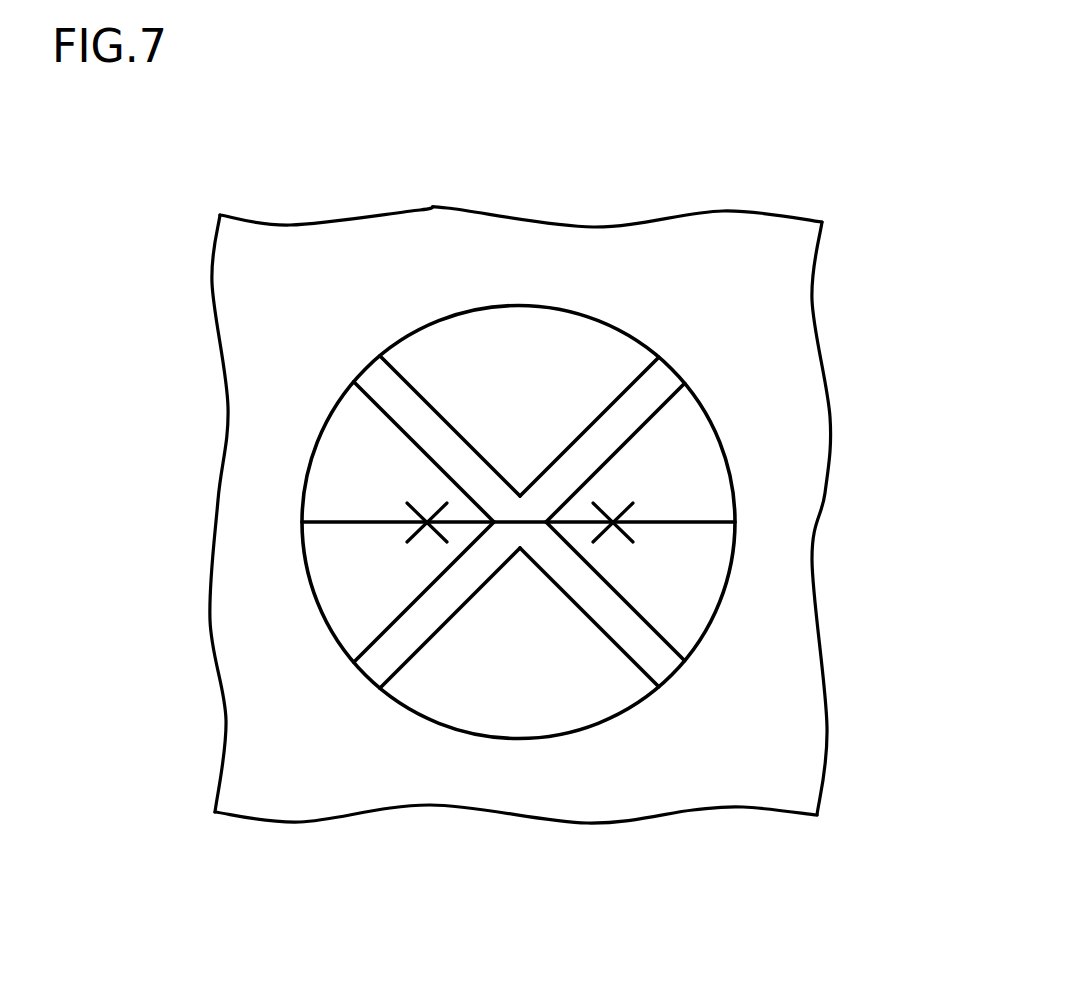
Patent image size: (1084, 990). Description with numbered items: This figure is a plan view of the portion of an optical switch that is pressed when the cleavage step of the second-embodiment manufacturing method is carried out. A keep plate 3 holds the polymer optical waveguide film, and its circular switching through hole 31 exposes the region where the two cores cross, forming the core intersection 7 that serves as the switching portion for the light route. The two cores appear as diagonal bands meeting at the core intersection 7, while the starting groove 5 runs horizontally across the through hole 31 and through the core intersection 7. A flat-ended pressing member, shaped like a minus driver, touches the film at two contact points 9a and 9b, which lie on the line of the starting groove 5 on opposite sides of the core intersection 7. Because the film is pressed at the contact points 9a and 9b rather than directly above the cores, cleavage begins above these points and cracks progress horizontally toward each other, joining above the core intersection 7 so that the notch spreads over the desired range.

The keep plate 3 is at (777, 315).
The switching through hole 31 is at (317, 437).
The starting groove 5 is at (625, 498).
The core intersection 7 is at (507, 523).
The contact point 9a is at (427, 521).
The contact point 9b is at (613, 521).